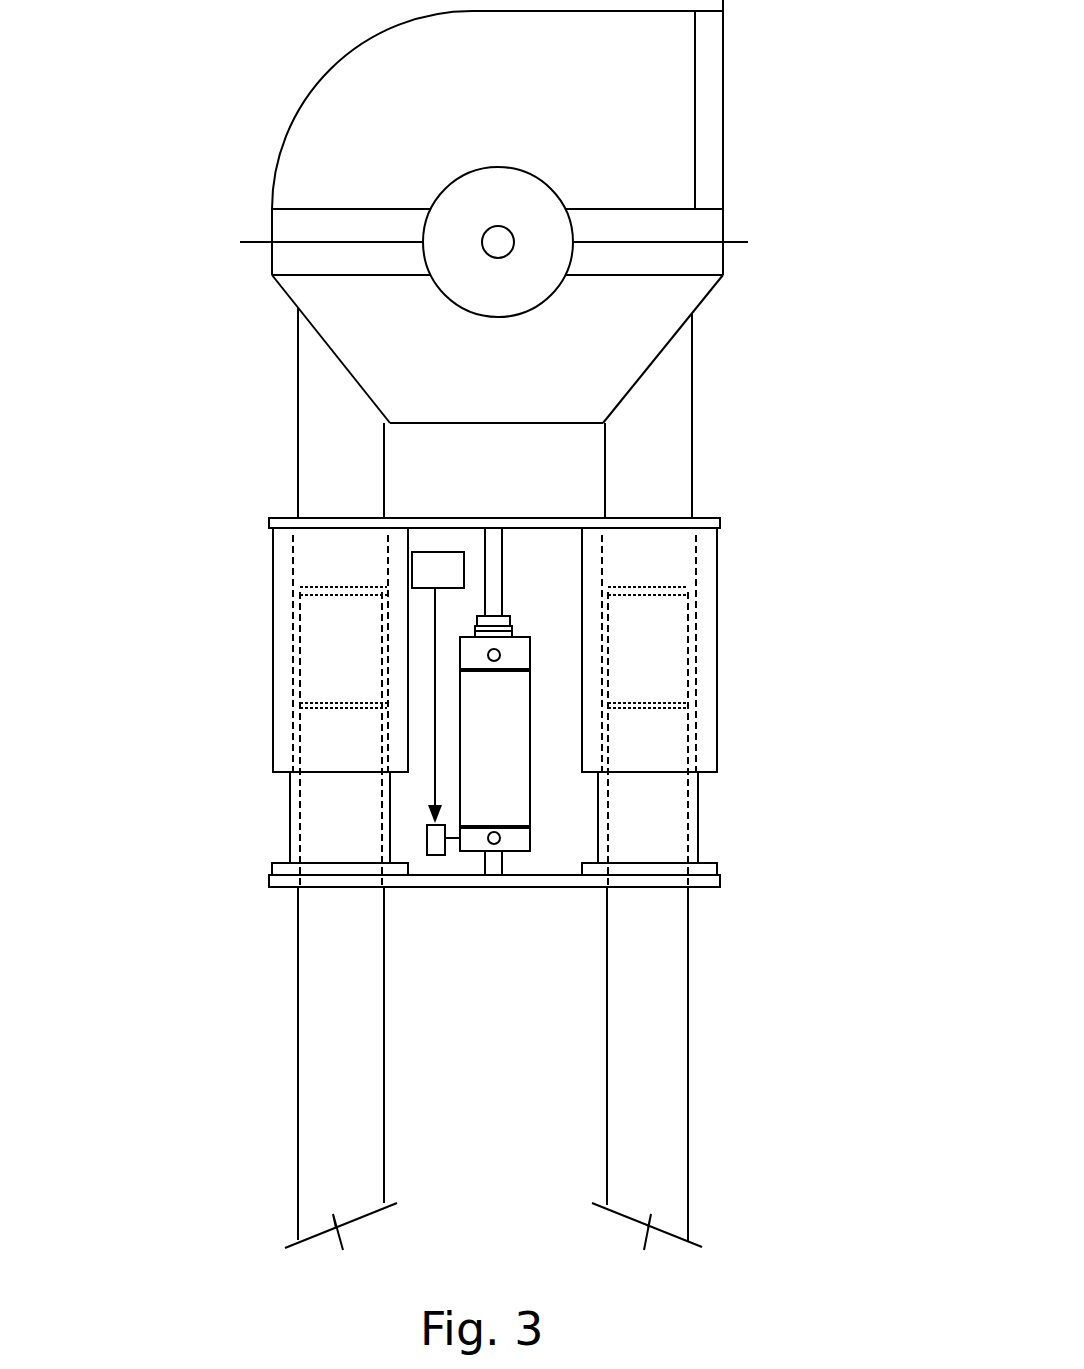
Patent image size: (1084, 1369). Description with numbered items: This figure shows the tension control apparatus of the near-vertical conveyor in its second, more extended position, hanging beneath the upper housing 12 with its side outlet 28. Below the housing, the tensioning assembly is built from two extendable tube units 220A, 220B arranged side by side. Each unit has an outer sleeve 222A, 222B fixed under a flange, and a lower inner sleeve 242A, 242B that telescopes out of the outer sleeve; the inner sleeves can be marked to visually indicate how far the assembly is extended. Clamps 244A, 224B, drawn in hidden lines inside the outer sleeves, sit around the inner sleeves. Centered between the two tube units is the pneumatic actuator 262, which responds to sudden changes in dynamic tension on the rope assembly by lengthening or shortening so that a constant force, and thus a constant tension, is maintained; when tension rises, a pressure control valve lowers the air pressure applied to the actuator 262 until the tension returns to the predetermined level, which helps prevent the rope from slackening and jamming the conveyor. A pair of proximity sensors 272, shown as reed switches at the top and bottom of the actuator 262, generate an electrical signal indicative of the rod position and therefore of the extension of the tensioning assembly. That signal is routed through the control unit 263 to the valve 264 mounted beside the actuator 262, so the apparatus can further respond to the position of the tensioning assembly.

The upper housing 12 is at (296, 72).
The outlet duct 28 is at (723, 149).
The lift assembly 220A is at (236, 885).
The lift assembly 220B is at (734, 867).
The outer sleeve 222A is at (272, 563).
The outer sleeve 222B is at (717, 563).
The clamp 224B is at (648, 712).
The clamp 244A is at (345, 597).
The lower support column 242A is at (290, 832).
The lower support column 242B is at (698, 832).
The pneumatic actuator 262 is at (504, 770).
The controller 263 is at (438, 570).
The valve 264 is at (432, 855).
The proximity sensors 272 is at (494, 832).